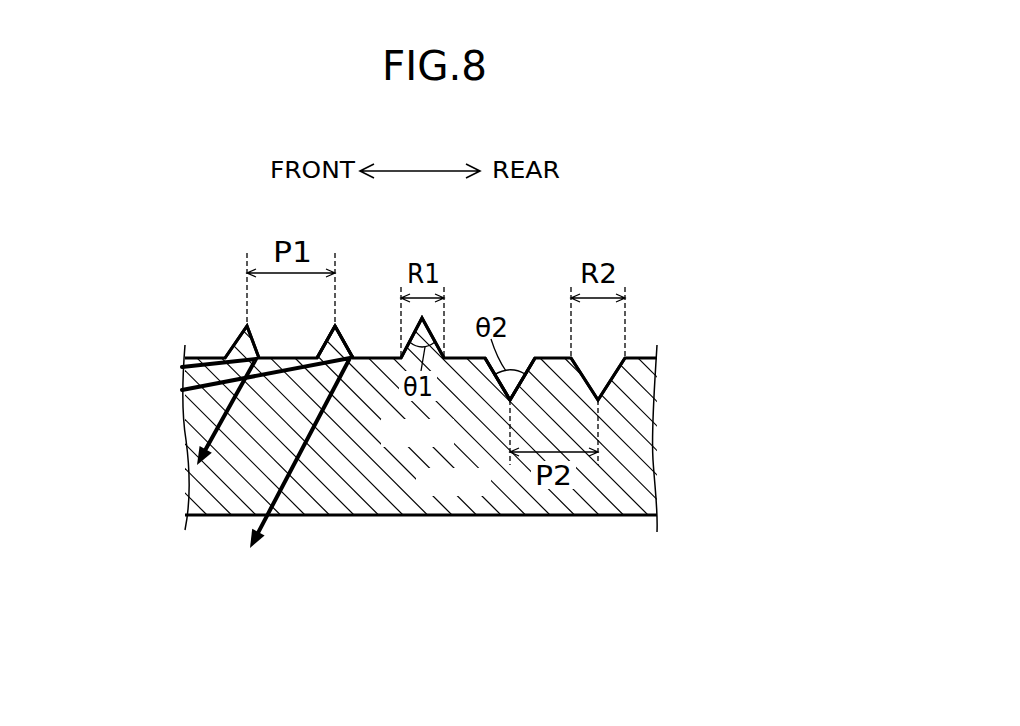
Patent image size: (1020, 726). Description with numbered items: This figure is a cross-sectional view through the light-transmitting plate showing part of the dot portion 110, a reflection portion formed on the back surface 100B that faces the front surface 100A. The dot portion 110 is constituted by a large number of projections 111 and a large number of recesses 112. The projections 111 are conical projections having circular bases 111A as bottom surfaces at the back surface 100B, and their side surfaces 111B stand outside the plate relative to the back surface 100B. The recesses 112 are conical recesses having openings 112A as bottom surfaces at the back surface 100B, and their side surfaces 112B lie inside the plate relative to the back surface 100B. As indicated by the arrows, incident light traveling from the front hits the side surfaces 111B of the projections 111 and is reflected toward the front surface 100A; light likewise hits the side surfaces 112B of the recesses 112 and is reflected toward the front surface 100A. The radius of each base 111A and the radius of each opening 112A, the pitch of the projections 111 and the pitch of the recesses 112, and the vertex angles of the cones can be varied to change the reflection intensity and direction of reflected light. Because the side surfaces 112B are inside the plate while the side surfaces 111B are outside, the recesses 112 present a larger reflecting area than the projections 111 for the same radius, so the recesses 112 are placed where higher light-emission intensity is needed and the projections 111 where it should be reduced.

The front surface 100A is at (623, 515).
The back surface 100B is at (640, 357).
The dot portion 110 is at (437, 394).
The projections 111 is at (232, 349).
The bases 111A is at (321, 350).
The side surfaces of the projections 111B is at (346, 344).
The recesses 112 is at (530, 367).
The openings 112A is at (488, 363).
The side surfaces of the recesses 112B is at (503, 390).